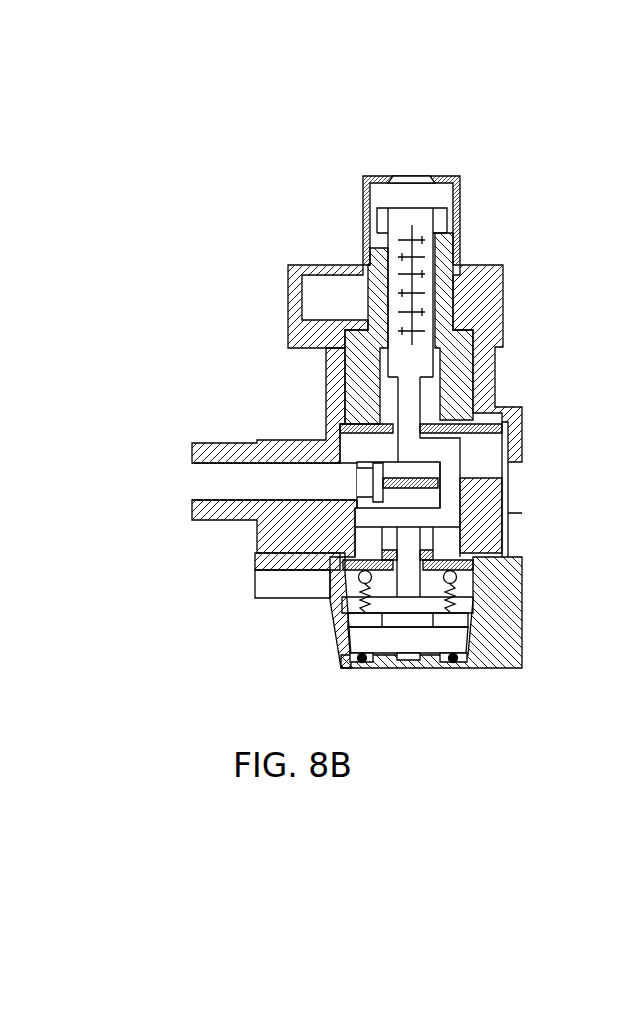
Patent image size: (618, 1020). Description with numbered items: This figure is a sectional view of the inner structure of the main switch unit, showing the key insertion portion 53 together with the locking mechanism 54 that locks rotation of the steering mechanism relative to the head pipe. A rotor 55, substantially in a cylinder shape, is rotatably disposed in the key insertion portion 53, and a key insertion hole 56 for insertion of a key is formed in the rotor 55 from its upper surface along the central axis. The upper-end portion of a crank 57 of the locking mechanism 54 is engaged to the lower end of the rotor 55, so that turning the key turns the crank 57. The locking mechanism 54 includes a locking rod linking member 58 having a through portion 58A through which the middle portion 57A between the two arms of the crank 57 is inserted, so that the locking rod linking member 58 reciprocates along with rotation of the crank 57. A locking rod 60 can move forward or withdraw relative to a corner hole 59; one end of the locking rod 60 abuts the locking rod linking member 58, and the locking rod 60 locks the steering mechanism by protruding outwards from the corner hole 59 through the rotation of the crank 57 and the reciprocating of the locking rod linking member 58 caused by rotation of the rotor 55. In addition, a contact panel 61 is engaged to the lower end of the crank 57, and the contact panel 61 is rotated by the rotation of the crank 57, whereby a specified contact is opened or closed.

The key insertion portion 53 is at (344, 201).
The locking mechanism 54 is at (276, 608).
The rotor 55 is at (392, 249).
The key insertion hole 56 is at (411, 183).
The crank 57 is at (366, 520).
The middle portion 57A is at (455, 474).
The locking rod linking member 58 is at (357, 487).
The through portion 58A is at (386, 479).
The corner hole 59 is at (192, 460).
The locking rod 60 is at (218, 486).
The contact panel 61 is at (438, 642).